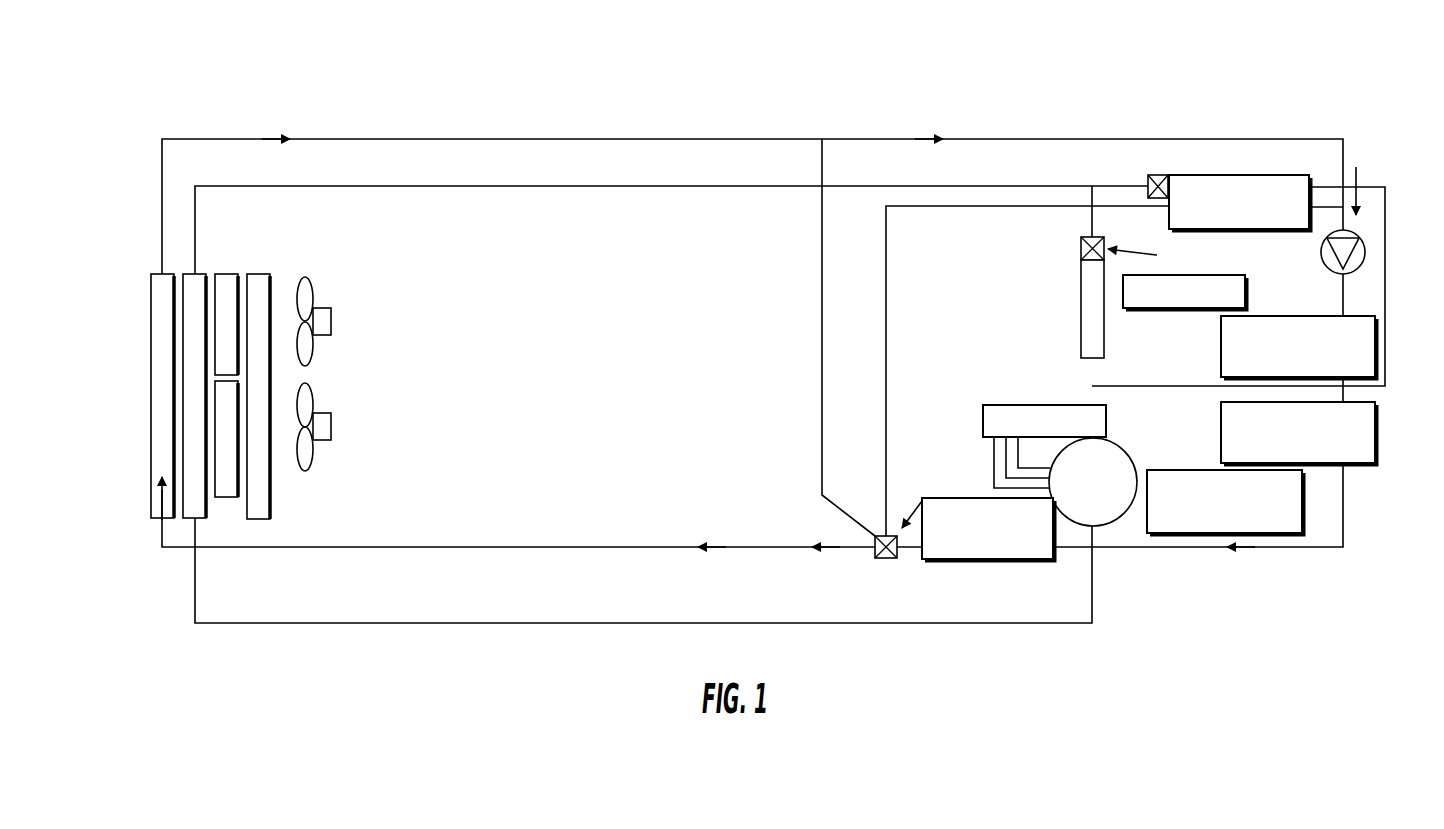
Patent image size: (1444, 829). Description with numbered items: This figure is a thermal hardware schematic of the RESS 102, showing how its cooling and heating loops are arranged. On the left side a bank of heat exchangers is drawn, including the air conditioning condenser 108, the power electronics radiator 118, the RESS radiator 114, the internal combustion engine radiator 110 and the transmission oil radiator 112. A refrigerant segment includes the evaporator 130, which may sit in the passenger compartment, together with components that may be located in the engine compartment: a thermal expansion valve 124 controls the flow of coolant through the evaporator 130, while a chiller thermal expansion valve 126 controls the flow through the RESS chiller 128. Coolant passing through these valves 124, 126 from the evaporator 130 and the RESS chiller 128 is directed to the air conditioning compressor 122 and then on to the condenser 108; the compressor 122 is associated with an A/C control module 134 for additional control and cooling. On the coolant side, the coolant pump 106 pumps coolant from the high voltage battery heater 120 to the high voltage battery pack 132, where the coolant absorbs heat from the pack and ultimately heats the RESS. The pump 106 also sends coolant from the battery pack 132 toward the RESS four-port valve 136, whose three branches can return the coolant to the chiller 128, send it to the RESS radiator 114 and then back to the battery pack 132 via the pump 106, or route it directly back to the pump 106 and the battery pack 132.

The RESS 102 is at (1122, 70).
The coolant pump 106 is at (1368, 255).
The air conditioning condenser 108 is at (187, 520).
The internal combustion engine (ICE) radiator 110 is at (257, 275).
The transmission oil radiator 112 is at (225, 498).
The RESS radiator 114 is at (157, 328).
The power electronics radiator 118 is at (227, 276).
The high voltage battery heater 120 is at (1377, 348).
The air conditioning compressor 122 is at (1295, 533).
The thermal expansion valve (TXV #1) 124 is at (1081, 246).
The chiller thermal expansion valve (TXV #2) 126 is at (1148, 180).
The RESS chiller 128 is at (1263, 175).
The evaporator 130 is at (1190, 308).
The high voltage battery pack 132 is at (1357, 466).
The A/C control module 134 is at (1008, 405).
The RESS four-port valve 136 is at (1010, 560).